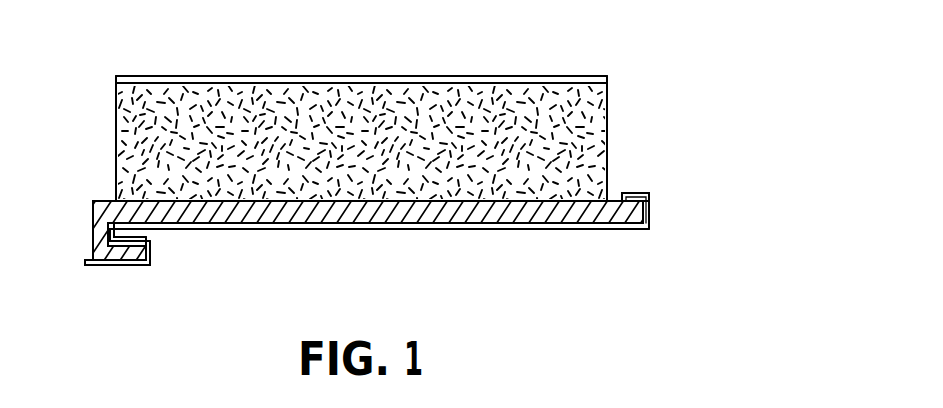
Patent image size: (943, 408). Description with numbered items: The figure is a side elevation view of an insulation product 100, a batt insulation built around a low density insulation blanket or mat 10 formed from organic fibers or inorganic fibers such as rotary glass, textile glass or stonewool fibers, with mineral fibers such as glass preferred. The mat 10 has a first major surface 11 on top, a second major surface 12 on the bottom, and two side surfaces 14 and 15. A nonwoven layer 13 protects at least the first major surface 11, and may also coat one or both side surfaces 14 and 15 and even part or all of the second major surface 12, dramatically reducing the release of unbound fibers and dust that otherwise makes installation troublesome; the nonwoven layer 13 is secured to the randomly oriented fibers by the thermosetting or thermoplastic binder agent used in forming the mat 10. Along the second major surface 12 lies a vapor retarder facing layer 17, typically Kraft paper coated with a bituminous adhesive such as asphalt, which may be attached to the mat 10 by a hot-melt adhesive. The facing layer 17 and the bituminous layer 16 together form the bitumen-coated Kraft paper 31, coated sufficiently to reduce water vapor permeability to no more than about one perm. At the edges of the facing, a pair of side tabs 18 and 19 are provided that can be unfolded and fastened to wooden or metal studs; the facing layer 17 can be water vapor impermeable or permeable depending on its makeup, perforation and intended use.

The insulation product 100 is at (714, 337).
The insulation blanket or mat 10 is at (512, 153).
The first major surface 11 is at (207, 84).
The second major surface 12 is at (244, 226).
The nonwoven layer 13 is at (318, 80).
The side surface 14 is at (605, 98).
The side surface 15 is at (116, 119).
The bituminous layer 16 is at (637, 213).
The vapor retarder facing layer 17 is at (613, 229).
The side tab 18 is at (127, 266).
The side tab 19 is at (643, 196).
The bitumen-coated Kraft paper 31 is at (188, 231).